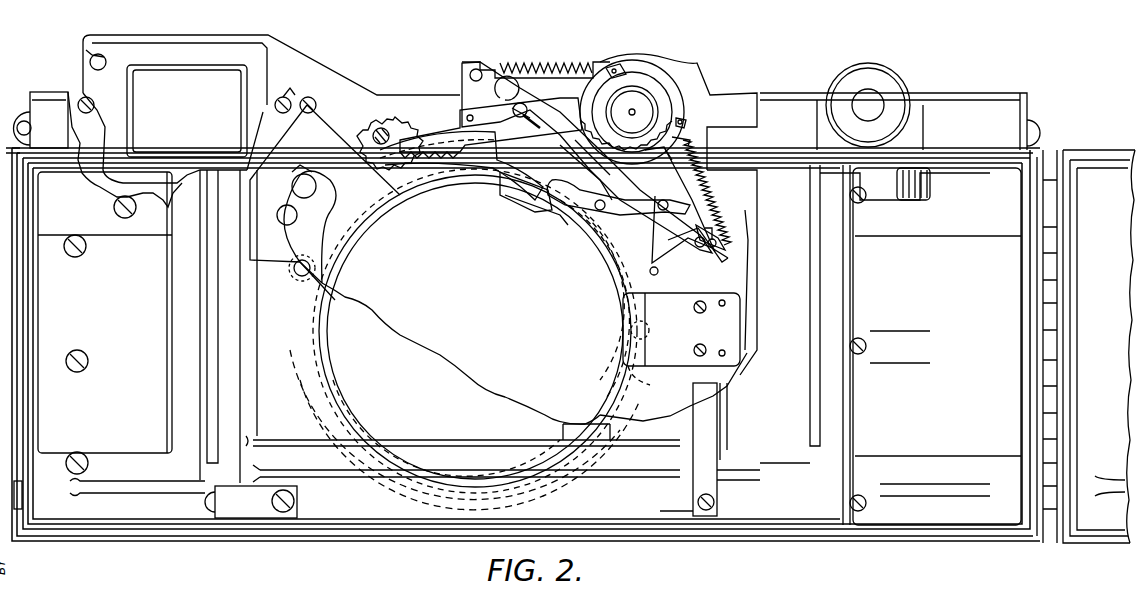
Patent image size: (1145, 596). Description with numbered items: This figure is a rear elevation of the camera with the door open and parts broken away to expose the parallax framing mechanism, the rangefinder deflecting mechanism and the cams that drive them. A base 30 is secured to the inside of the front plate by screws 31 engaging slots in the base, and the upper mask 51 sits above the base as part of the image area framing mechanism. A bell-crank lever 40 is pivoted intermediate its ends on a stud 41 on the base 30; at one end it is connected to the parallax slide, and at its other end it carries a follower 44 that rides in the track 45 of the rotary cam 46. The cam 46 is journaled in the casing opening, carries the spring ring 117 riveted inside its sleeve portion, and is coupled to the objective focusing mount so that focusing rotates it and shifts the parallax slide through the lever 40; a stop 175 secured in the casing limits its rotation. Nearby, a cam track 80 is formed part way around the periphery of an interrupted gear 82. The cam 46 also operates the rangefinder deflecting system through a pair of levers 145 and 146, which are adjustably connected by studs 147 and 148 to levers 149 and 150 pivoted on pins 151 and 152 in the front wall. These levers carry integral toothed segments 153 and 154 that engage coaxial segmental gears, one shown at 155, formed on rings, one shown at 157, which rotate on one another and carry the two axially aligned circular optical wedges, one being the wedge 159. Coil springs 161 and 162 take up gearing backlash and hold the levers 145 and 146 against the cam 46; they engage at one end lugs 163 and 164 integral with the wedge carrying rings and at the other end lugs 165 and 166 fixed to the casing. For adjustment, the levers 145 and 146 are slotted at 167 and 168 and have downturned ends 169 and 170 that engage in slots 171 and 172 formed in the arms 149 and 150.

The upper mask 51 is at (178, 55).
The base 30 is at (270, 70).
The screws 31 is at (80, 108).
The stud 41 is at (317, 105).
The interrupted gear 82 is at (405, 128).
The pin 152 is at (467, 117).
The lever 150 is at (460, 128).
The slot 172 is at (470, 72).
The downturned end 170 is at (470, 78).
The lug 166 is at (498, 65).
The coil spring 162 is at (538, 65).
The lug 164 is at (620, 68).
The ring 157 is at (650, 80).
The stud 148 is at (530, 112).
The slot 168 is at (542, 122).
The toothed segment 154 is at (607, 88).
The segmental gear 155 is at (612, 148).
The optical wedge 159 is at (652, 110).
The lug 163 is at (686, 122).
The toothed segment 153 is at (690, 143).
The lever 149 is at (667, 160).
The coil spring 161 is at (702, 192).
The lug 165 is at (730, 230).
The downturned end 169 is at (716, 243).
The slot 171 is at (710, 248).
The slot 167 is at (705, 253).
The pin 151 is at (658, 273).
The lever 145 is at (615, 200).
The stud 147 is at (662, 199).
The lever 146 is at (577, 158).
The bell-crank lever 40 is at (497, 160).
The follower 44 is at (530, 180).
The track 45 is at (543, 200).
The cam track 80 is at (340, 200).
The spring ring 117 is at (335, 275).
The stop 175 is at (690, 355).
The rotary cam 46 is at (640, 380).